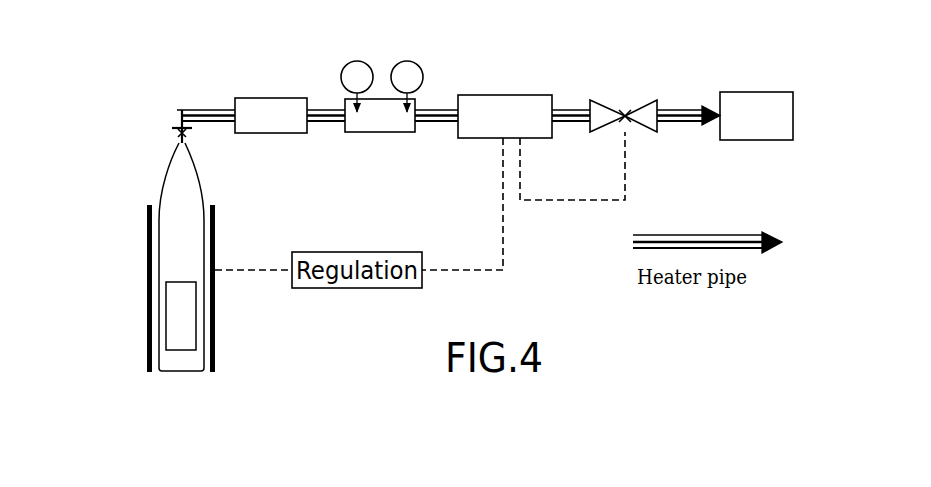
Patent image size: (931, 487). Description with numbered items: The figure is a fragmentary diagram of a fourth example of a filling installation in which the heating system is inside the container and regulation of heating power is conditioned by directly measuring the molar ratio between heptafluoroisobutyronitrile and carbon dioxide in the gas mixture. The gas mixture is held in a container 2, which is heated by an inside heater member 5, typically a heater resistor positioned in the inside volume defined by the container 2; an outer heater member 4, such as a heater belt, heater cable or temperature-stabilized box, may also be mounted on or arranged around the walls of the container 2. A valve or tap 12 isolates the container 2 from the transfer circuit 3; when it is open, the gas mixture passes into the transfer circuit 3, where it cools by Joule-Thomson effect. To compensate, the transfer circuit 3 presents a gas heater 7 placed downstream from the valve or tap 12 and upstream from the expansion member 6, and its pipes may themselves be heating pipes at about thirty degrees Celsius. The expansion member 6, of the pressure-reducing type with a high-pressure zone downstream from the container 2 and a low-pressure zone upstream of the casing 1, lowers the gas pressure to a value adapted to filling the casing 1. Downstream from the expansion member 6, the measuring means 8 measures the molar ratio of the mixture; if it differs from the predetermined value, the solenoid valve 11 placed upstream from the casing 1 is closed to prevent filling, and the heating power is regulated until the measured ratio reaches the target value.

The casing 1 is at (773, 103).
The container 2 is at (158, 178).
The transfer circuit 3 is at (325, 126).
The outer heater member 4 is at (146, 247).
The inside heater member 5 is at (180, 318).
The expansion member 6 is at (382, 95).
The gas heater 7 is at (268, 137).
The means for measuring the molar ratio 8 is at (522, 96).
The solenoid valve 11 is at (625, 113).
The valve or tap 12 is at (164, 128).